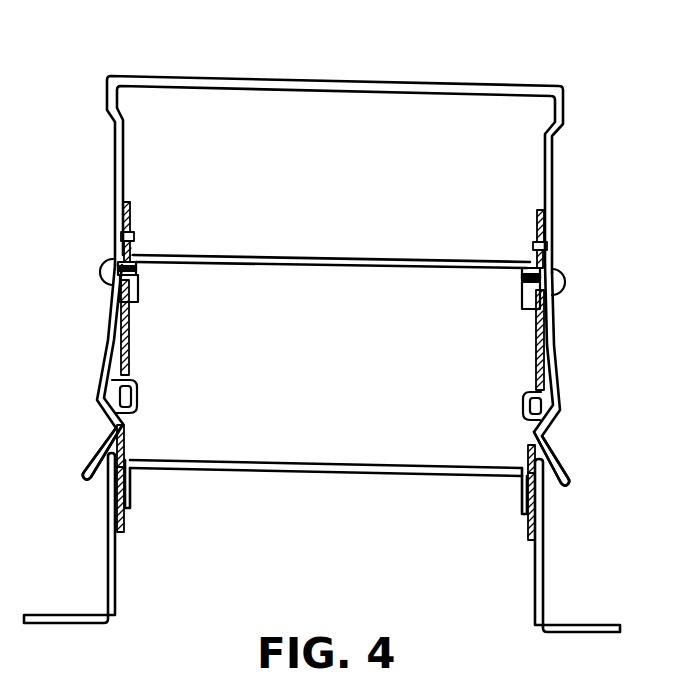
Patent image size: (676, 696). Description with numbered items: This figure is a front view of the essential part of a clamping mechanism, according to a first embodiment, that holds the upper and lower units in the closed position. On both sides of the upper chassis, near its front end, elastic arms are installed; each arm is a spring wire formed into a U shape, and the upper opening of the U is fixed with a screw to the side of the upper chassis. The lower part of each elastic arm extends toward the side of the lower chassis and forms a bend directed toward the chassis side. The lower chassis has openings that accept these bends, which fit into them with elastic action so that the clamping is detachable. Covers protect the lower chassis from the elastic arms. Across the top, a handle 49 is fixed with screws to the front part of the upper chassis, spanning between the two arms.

The handle 49 is at (345, 82).